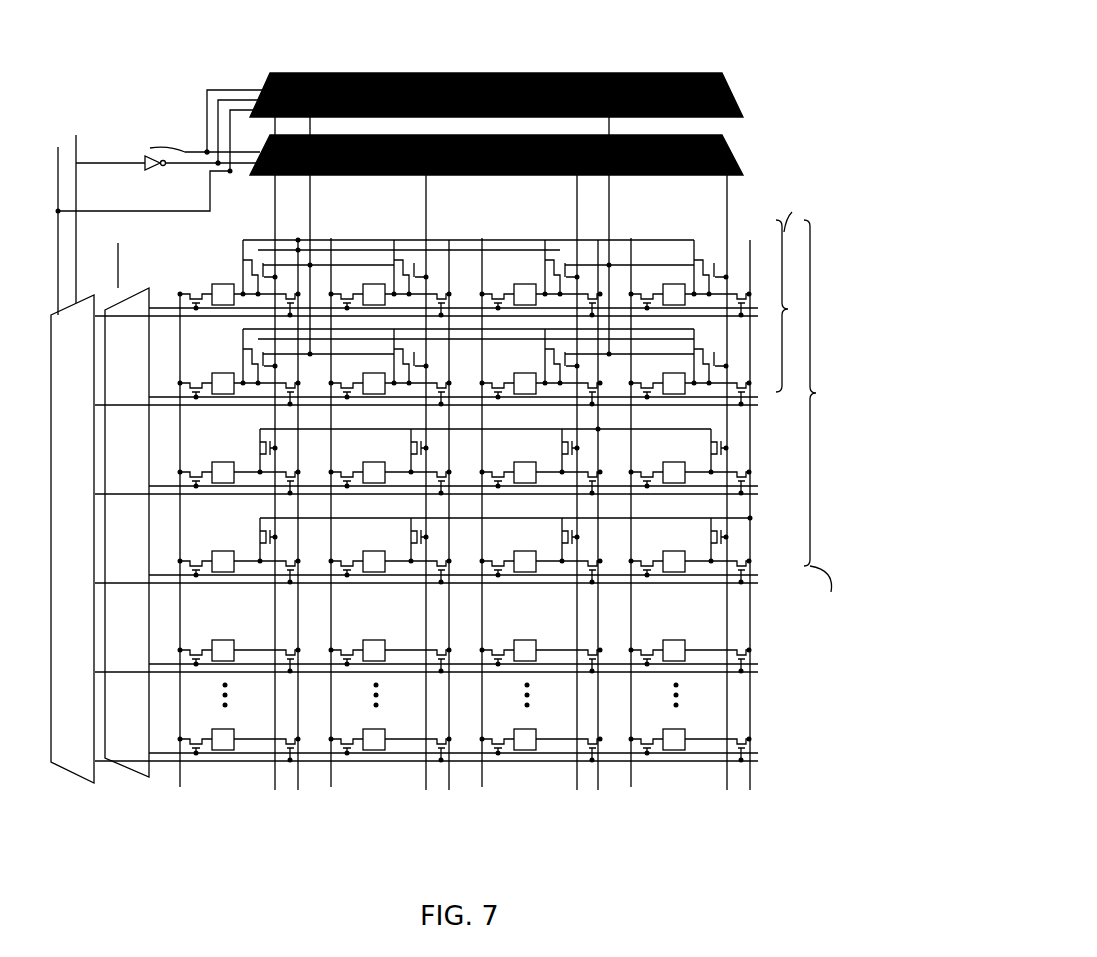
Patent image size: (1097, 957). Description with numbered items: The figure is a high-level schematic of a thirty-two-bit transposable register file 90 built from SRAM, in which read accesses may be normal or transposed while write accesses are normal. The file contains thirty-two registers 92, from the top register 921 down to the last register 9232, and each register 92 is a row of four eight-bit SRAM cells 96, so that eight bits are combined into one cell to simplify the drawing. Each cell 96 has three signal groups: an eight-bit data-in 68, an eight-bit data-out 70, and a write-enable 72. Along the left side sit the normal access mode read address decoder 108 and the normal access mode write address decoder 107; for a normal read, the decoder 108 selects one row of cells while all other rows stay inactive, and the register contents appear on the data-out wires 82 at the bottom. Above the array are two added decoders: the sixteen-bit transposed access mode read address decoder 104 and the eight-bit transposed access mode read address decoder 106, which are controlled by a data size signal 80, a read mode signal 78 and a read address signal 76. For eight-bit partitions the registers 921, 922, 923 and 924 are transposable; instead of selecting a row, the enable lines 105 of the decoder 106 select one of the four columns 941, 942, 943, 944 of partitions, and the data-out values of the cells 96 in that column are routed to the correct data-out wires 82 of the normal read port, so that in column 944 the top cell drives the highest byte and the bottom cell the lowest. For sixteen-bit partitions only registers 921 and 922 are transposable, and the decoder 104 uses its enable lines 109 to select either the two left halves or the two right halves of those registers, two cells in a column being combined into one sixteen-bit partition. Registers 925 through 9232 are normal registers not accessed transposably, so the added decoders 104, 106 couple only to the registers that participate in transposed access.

The 8-bit data-in 68 is at (182, 788).
The 8-bit data-out 70 is at (715, 726).
The write-enable 72 is at (163, 305).
The read address signal 76 is at (58, 163).
The read mode signal 78 is at (86, 137).
The data size signal 80 is at (206, 91).
The data-out wires 82 is at (296, 788).
The transposable register file 90 is at (726, 46).
The register 92 is at (808, 403).
The register 921 is at (772, 275).
The register 922 is at (758, 384).
The register 923 is at (758, 471).
The register 924 is at (758, 562).
The register 925 is at (768, 651).
The register 9232 is at (768, 739).
The column 941 is at (673, 812).
The column 942 is at (522, 812).
The column 943 is at (370, 812).
The column 944 is at (230, 810).
The SRAM cell 96 is at (512, 282).
The 16-bit transposed access mode read address decoder 104 is at (437, 75).
The enable lines 105 is at (273, 220).
The 8-bit transposed access mode read address decoder 106 is at (735, 163).
The normal access mode write address decoder 107 is at (130, 770).
The normal access mode read address decoder 108 is at (70, 775).
The enable lines 109 is at (312, 223).